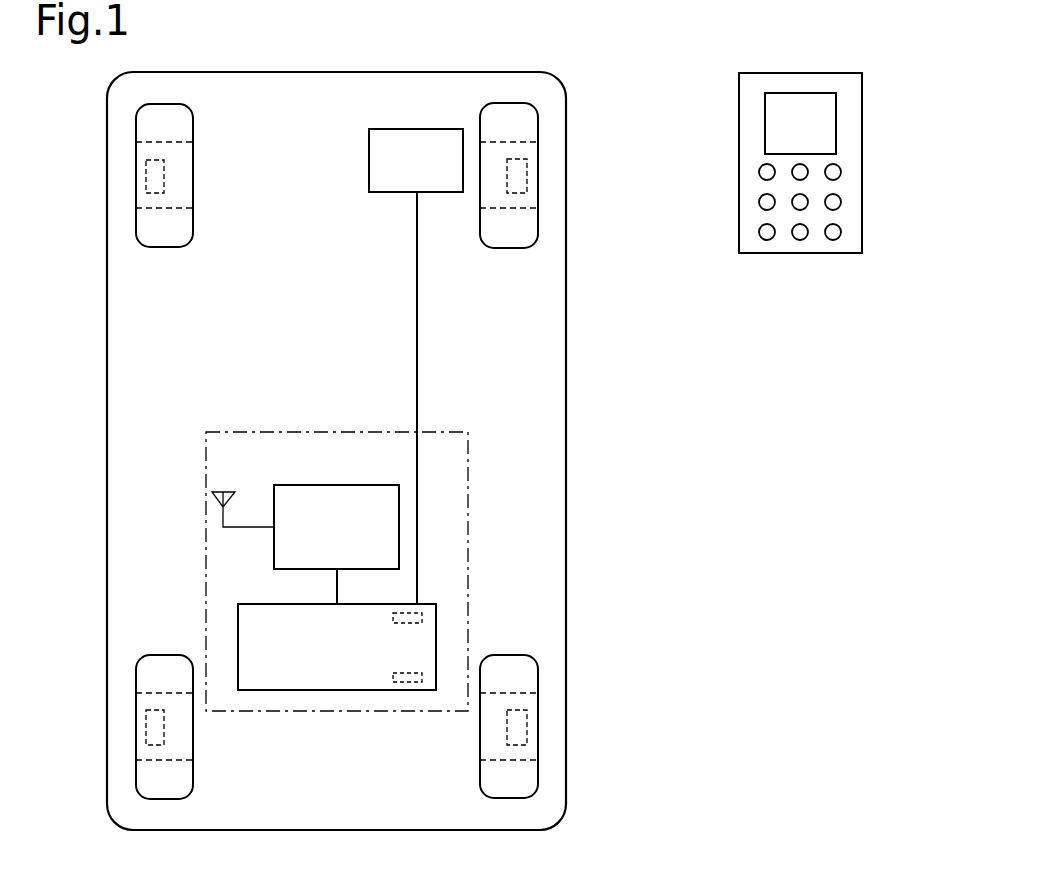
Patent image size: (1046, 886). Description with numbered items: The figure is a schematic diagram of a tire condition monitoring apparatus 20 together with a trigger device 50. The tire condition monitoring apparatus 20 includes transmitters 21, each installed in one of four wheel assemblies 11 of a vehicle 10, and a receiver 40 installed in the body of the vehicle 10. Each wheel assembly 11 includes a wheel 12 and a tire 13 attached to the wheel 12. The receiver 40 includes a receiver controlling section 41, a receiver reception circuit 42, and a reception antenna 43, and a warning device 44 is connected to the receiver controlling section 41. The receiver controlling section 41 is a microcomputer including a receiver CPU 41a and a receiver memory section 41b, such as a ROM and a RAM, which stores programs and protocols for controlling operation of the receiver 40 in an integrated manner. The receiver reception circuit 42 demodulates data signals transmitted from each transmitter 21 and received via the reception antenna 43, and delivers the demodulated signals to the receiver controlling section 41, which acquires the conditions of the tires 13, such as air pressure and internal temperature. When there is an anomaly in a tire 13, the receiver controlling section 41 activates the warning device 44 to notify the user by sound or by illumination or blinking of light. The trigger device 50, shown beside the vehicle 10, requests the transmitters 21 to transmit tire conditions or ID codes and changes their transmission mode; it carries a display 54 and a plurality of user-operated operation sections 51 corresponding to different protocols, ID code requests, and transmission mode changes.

The vehicle 10 is at (566, 90).
The wheel assembly 11 is at (62, 207).
The wheel 12 is at (146, 213).
The tire 13 is at (153, 247).
The tire condition monitoring apparatus 20 is at (283, 393).
The transmitter 21 is at (146, 176).
The receiver 40 is at (206, 582).
The receiver controlling section 41 is at (250, 604).
The receiver CPU 41a is at (422, 606).
The receiver memory section 41b is at (405, 683).
The receiver reception circuit 42 is at (300, 485).
The reception antenna 43 is at (229, 491).
The warning device 44 is at (417, 129).
The trigger device 50 is at (800, 255).
The operation section 51 is at (767, 232).
The display 54 is at (765, 122).